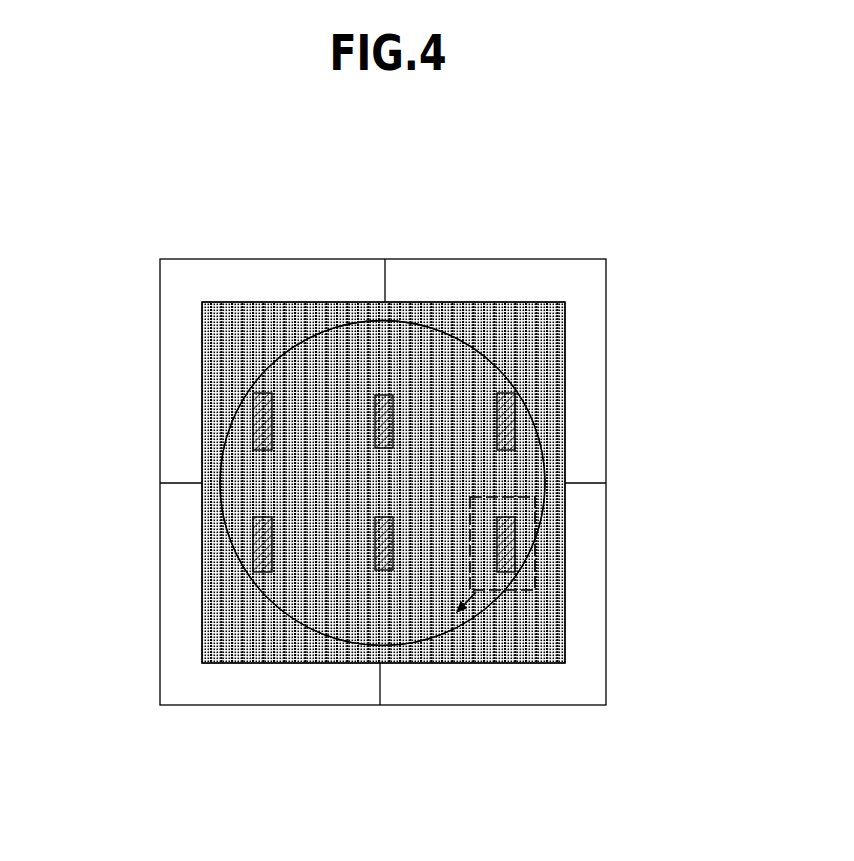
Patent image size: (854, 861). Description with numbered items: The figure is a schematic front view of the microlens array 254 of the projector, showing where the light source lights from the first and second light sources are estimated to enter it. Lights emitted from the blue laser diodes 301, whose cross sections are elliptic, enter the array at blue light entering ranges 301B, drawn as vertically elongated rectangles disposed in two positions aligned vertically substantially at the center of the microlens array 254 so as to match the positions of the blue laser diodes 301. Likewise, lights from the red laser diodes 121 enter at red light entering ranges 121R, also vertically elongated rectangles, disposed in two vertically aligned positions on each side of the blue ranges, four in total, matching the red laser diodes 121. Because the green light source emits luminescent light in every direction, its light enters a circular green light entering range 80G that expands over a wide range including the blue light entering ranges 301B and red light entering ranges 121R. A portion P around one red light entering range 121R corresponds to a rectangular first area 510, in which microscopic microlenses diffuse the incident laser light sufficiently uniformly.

The microlens array 254 is at (508, 259).
The green light entering range 80G is at (527, 302).
The red laser diodes 121 is at (202, 373).
The red light entering ranges 121R is at (384, 485).
The first area 510 is at (652, 536).
The blue laser diodes 301 is at (323, 300).
The blue light entering ranges 301B is at (377, 321).
The portion P is at (462, 612).